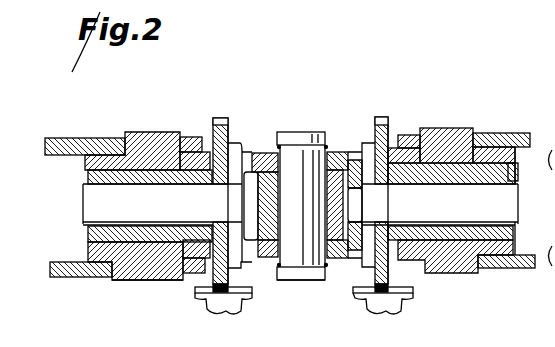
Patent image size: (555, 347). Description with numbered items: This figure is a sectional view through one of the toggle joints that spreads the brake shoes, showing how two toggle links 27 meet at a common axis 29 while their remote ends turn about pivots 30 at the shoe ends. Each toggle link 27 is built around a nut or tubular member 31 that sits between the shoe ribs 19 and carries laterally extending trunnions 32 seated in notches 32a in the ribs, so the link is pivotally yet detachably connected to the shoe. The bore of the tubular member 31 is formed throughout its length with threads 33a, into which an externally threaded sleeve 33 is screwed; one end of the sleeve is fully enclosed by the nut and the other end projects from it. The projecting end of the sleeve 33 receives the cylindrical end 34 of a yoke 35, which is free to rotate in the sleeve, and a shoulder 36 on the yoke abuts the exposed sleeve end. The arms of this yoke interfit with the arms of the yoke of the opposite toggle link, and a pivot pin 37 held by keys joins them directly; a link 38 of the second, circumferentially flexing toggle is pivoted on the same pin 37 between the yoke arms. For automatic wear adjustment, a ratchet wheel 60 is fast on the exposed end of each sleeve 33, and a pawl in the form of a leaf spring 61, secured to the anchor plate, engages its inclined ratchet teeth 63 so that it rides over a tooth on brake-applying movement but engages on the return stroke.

The shoe ribs 19 is at (72, 138).
The toggle links 27 is at (329, 119).
The common axis 29 is at (309, 283).
The pivots 30 is at (470, 150).
The nut or tubular member 31 is at (110, 276).
The trunnions 32 is at (155, 262).
The notches 32a is at (192, 136).
The externally threaded sleeve 33 is at (409, 141).
The threads 33a is at (92, 176).
The cylindrical end 34 is at (453, 178).
The yoke 35 is at (356, 162).
The shoulder 36 is at (231, 144).
The pivot pin 37 is at (303, 140).
The link 38 is at (276, 205).
The ratchet wheels 60 is at (193, 135).
The leaf spring 61 is at (213, 312).
The ratchet teeth 63 is at (222, 119).